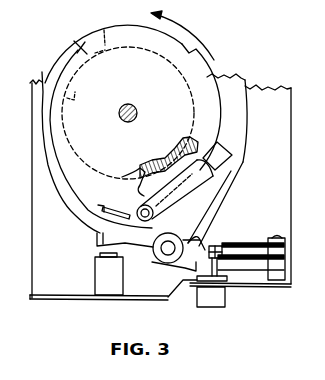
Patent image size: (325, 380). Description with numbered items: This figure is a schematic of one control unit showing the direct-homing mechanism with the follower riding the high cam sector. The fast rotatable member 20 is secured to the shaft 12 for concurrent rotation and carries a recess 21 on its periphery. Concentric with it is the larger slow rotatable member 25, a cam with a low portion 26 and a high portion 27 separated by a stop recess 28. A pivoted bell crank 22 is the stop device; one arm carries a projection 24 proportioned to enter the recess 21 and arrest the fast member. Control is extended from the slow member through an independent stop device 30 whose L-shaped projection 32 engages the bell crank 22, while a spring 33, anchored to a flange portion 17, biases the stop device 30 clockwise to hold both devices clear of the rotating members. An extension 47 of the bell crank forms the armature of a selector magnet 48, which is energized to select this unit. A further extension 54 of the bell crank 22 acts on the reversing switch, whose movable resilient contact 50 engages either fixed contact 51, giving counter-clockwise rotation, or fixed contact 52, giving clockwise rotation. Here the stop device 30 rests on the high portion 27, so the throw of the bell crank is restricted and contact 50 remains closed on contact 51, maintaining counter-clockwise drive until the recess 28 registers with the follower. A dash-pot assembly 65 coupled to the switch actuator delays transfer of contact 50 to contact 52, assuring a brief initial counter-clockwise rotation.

The shaft 12 is at (146, 84).
The flange portion 17 is at (250, 113).
The fast rotatable member 20 is at (131, 25).
The recess 21 is at (203, 50).
The bell crank 22 is at (208, 203).
The projection 24 is at (232, 147).
The slow rotatable member 25 is at (74, 44).
The low portion 26 is at (69, 98).
The high portion 27 is at (104, 30).
The stop recess 28 is at (160, 160).
The stop device 30 is at (206, 184).
The L-shaped projection 32 is at (243, 160).
The spring 33 is at (118, 207).
The extension 47 is at (100, 228).
The selector magnet 48 is at (107, 273).
The movable intermediate resilient contact 50 is at (215, 246).
The fixed contact 51 is at (223, 258).
The fixed contact 52 is at (223, 245).
The further extension 54 is at (183, 268).
The dash-pot assembly 65 is at (212, 300).